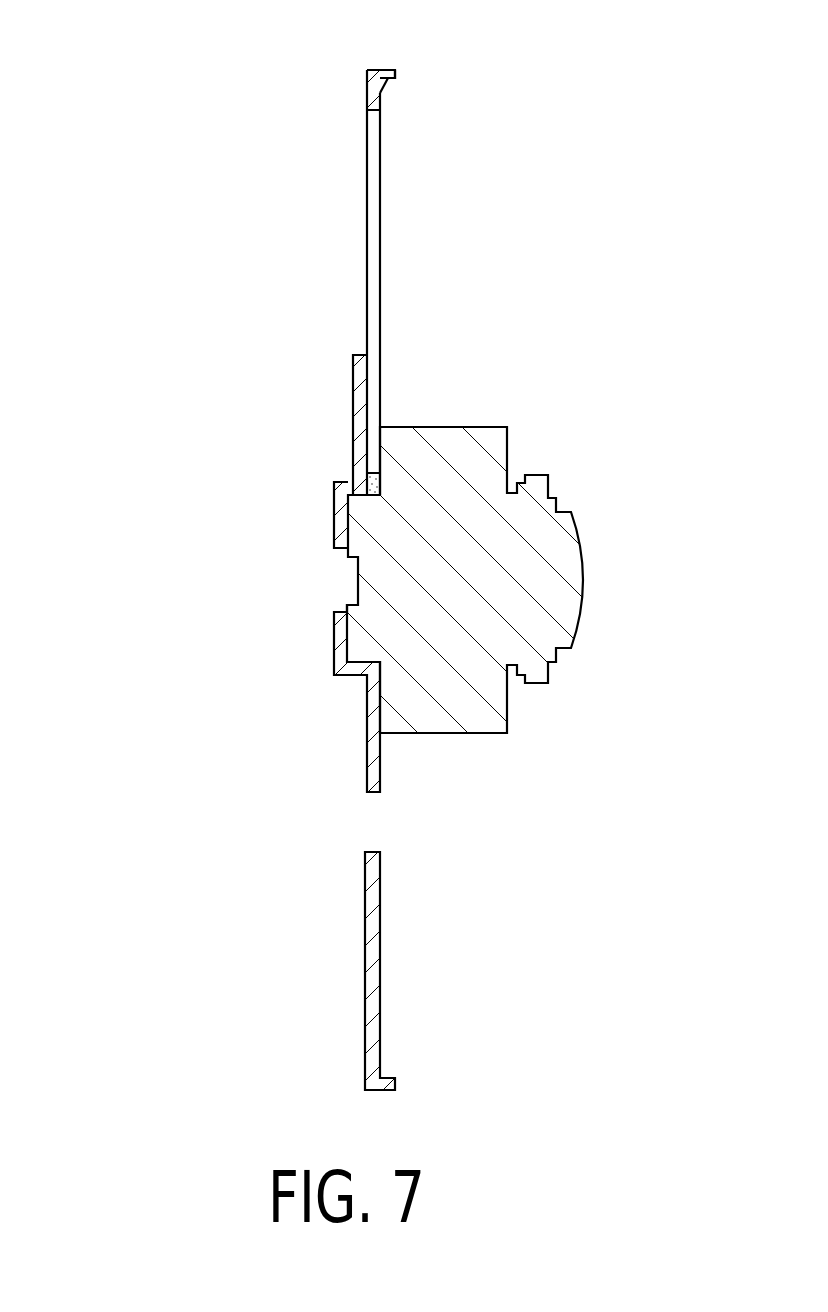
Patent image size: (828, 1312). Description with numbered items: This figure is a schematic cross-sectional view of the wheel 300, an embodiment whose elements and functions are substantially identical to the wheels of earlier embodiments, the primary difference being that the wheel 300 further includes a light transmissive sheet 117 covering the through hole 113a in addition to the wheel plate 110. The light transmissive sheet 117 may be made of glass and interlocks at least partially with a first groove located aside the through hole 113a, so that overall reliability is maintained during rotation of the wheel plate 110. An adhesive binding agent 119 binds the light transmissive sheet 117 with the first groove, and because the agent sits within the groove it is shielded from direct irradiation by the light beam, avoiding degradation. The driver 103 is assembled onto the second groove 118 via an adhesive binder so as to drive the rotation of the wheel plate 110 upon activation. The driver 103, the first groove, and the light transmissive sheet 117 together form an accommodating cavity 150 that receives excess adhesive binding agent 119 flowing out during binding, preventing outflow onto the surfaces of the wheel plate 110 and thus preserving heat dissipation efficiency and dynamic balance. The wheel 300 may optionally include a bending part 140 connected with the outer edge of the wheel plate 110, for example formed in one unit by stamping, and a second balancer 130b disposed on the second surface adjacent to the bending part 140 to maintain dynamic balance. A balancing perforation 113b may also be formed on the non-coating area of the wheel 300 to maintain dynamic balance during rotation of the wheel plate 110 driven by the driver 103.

The wheel 300 is at (190, 185).
The through hole 113a is at (348, 210).
The balancing perforation 113b is at (363, 827).
The light transmissive sheet 117 is at (375, 228).
The bending part 140 is at (385, 70).
The second balancer 130b is at (385, 90).
The adhesive binding agent 119 is at (360, 397).
The accommodating cavity 150 is at (374, 486).
The driver 103 is at (495, 563).
The second groove 118 is at (373, 640).
The wheel plate 110 is at (373, 978).